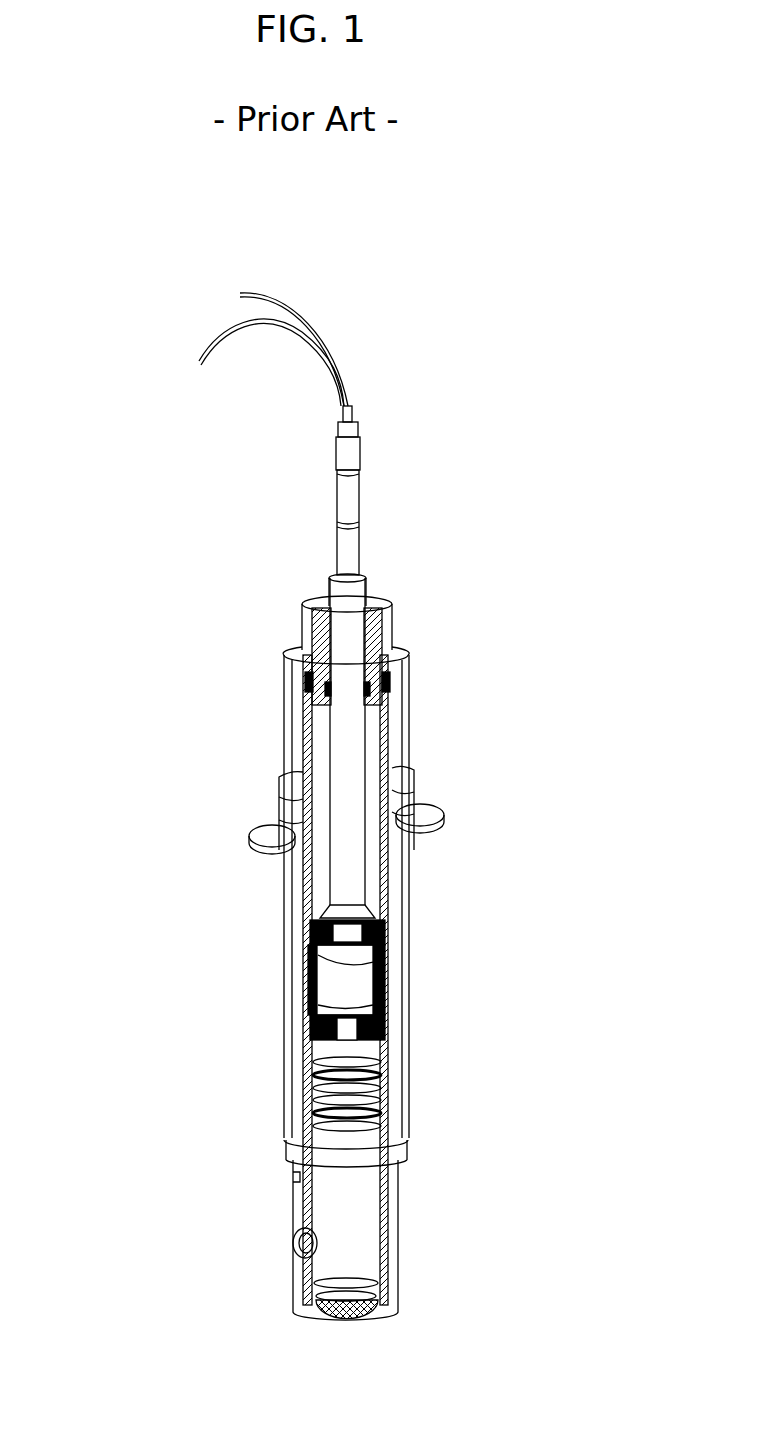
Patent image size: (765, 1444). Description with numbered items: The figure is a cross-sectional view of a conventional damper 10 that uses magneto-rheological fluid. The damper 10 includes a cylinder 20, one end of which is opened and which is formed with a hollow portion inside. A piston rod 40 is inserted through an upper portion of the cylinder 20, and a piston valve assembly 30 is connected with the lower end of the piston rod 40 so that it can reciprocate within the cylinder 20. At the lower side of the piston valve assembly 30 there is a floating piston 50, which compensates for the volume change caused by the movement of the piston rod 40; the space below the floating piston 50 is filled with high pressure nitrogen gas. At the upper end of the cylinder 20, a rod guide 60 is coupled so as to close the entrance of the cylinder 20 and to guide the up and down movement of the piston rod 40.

The damper 10 is at (172, 793).
The cylinder 20 is at (297, 940).
The piston valve assembly 30 is at (328, 985).
The piston rod 40 is at (335, 545).
The floating piston 50 is at (363, 1097).
The rod guide 60 is at (385, 627).